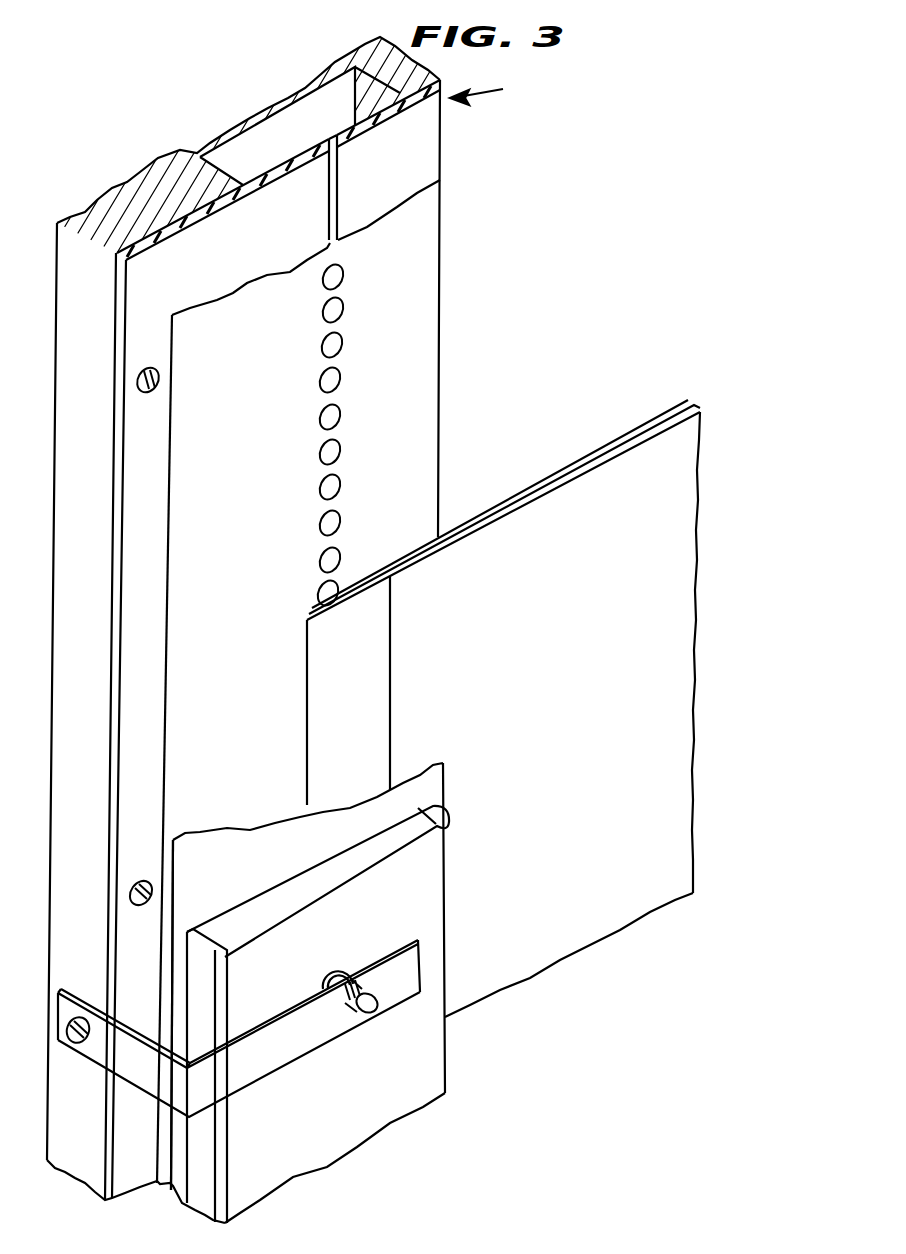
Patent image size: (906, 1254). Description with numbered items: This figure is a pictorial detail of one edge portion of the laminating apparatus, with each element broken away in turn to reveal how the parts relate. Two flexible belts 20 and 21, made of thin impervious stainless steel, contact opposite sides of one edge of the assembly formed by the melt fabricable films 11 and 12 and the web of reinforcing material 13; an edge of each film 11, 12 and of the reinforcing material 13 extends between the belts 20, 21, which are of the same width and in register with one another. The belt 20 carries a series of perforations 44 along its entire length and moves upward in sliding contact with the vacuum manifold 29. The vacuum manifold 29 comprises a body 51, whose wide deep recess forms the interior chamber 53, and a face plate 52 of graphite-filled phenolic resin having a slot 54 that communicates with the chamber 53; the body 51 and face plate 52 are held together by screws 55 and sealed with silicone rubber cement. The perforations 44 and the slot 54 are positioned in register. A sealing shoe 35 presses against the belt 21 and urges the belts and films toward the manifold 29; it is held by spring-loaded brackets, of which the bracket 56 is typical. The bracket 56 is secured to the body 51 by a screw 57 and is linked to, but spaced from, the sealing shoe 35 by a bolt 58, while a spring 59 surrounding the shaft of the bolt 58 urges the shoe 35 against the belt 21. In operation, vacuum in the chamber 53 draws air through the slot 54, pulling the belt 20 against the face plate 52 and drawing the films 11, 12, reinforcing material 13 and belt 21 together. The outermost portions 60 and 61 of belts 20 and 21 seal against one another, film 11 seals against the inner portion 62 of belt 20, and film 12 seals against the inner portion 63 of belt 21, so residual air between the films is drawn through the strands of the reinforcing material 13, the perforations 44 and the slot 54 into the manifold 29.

The flexible belt 20 is at (428, 262).
The body 51 is at (411, 63).
The interior chamber 53 is at (262, 140).
The face plate 52 is at (245, 251).
The slot 54 is at (334, 200).
The vacuum manifold 29 is at (492, 93).
The outermost portion of belt 20 60 is at (213, 735).
The perforations 44 is at (336, 447).
The inner portion of belt 20 62 is at (410, 455).
The screws 55 is at (158, 378).
The melt fabricable film 12 is at (688, 446).
The melt fabricable film 11 is at (657, 413).
The web of reinforcing material 13 is at (698, 402).
The flexible belt 21 is at (323, 865).
The outermost portion of belt 21 61 is at (208, 873).
The sealing shoe 35 is at (350, 1133).
The inner portion of belt 21 63 is at (438, 804).
The bracket 56 is at (257, 1063).
The screw 57 is at (80, 1045).
The spring 59 is at (339, 979).
The bolt 58 is at (366, 1009).